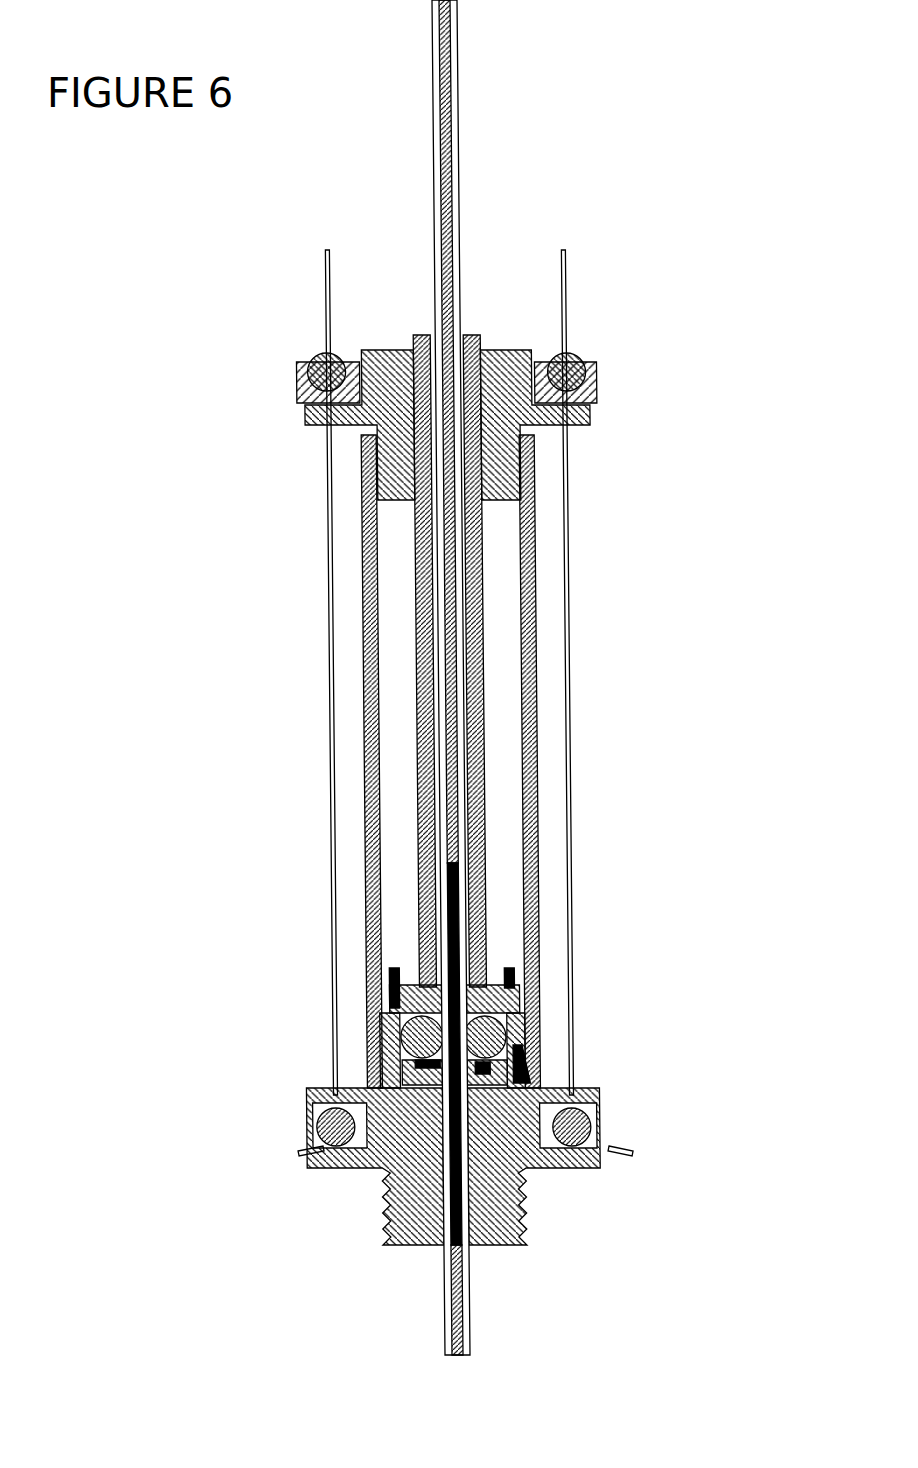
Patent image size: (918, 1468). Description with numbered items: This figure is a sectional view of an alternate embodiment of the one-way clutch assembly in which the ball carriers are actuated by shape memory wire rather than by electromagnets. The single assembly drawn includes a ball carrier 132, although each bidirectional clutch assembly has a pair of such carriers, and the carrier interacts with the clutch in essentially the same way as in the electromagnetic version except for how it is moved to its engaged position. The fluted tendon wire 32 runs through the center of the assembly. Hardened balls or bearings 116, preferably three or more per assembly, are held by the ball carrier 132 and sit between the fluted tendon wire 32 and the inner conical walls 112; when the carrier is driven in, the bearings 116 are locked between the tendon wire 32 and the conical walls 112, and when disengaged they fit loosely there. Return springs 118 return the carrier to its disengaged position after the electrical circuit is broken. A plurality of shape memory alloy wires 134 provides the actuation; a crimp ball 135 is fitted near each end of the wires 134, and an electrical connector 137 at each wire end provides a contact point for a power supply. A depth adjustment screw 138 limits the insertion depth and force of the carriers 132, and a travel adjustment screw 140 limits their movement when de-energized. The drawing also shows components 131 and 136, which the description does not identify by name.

The fluted tendon wire 32 is at (460, 192).
The electrical connector 137 is at (570, 263).
The ball carrier 132 is at (540, 347).
The shape memory alloy wires 134 is at (570, 470).
The outer tube 136 is at (538, 577).
The inner tube 131 is at (485, 705).
The depth adjustment screw 138 is at (552, 852).
The travel adjustment screw 140 is at (595, 891).
The bearings 116 is at (538, 1000).
The inner conical walls 112 is at (538, 1045).
The return springs 118 is at (540, 1077).
The crimp ball 135 is at (602, 1123).